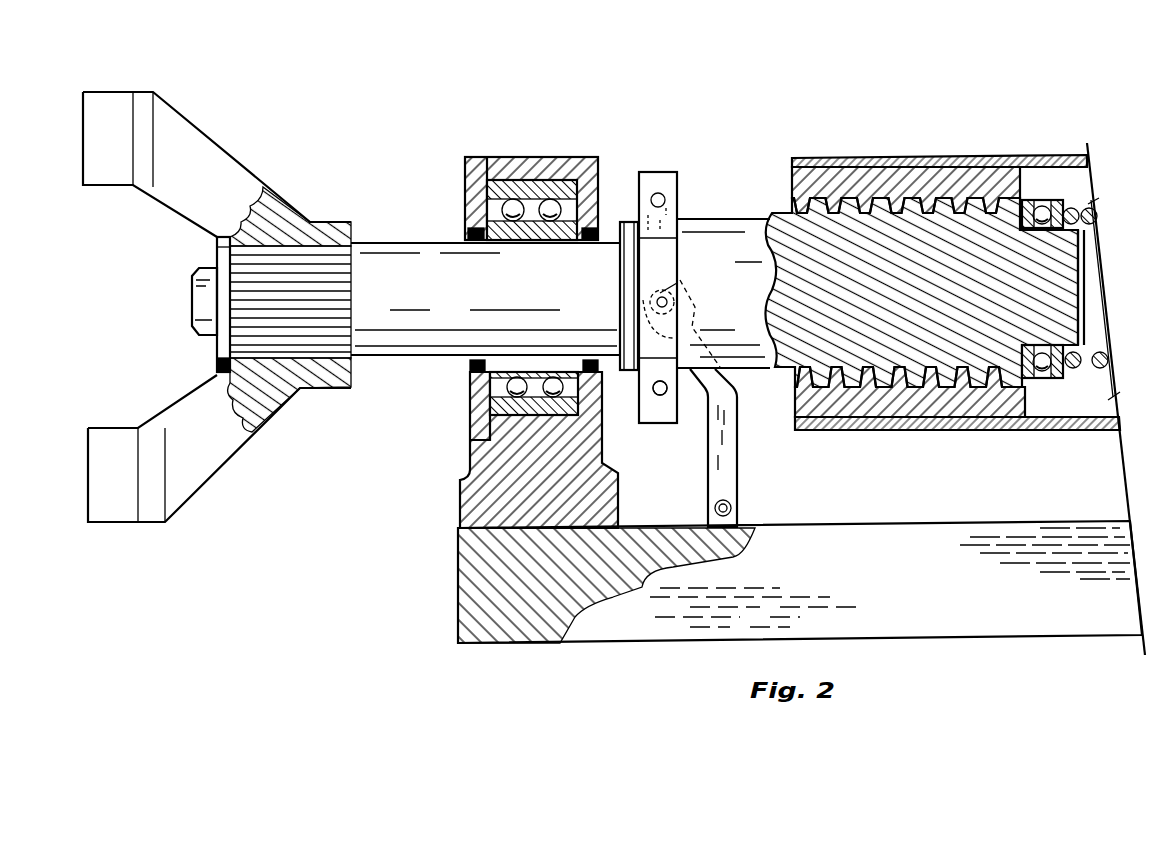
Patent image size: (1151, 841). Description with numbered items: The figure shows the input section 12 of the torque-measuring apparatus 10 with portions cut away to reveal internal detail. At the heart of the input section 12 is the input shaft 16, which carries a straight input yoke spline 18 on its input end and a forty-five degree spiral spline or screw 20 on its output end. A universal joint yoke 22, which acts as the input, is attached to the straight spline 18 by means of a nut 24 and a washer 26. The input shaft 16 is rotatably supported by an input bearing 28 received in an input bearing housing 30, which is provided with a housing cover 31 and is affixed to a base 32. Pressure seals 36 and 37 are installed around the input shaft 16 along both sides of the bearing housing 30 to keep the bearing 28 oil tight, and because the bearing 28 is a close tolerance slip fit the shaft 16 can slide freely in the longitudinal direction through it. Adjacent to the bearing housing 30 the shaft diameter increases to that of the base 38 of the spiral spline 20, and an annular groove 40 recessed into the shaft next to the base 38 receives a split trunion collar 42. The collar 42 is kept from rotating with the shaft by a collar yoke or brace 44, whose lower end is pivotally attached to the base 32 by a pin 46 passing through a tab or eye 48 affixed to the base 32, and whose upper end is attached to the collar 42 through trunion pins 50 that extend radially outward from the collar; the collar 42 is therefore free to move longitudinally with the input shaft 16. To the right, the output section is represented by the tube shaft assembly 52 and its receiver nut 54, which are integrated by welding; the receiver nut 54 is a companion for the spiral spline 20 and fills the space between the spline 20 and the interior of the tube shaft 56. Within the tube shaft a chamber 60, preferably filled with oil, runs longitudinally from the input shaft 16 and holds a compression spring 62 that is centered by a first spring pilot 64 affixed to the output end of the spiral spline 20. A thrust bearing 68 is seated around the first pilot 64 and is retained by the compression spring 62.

The device or apparatus 10 is at (457, 55).
The input section 12 is at (437, 257).
The input shaft 16 is at (373, 273).
The straight input yoke spline 18 is at (307, 328).
The spiral spline or screw 20 is at (782, 227).
The universal joint yoke 22 is at (183, 130).
The nut 24 is at (192, 282).
The washer 26 is at (222, 353).
The input bearing 28 is at (545, 197).
The input bearing housing 30 is at (507, 160).
The housing cover 31 is at (478, 167).
The base 32 is at (473, 593).
The pressure seal 36 is at (470, 233).
The pressure seal 37 is at (597, 233).
The base of the spiral spline 38 is at (642, 230).
The annular groove 40 is at (653, 388).
The split trunion collar 42 is at (668, 186).
The collar yoke or brace 44 is at (723, 412).
The pin 46 is at (733, 503).
The tab or eye 48 is at (737, 517).
The trunion pin 50 is at (660, 298).
The tube shaft assembly 52 is at (898, 162).
The receiver nut 54 is at (825, 162).
The tube shaft 56 is at (847, 425).
The chamber 60 is at (1057, 407).
The compression spring 62 is at (1100, 283).
The first spring pilot 64 is at (1084, 257).
The thrust bearing 68 is at (1040, 207).